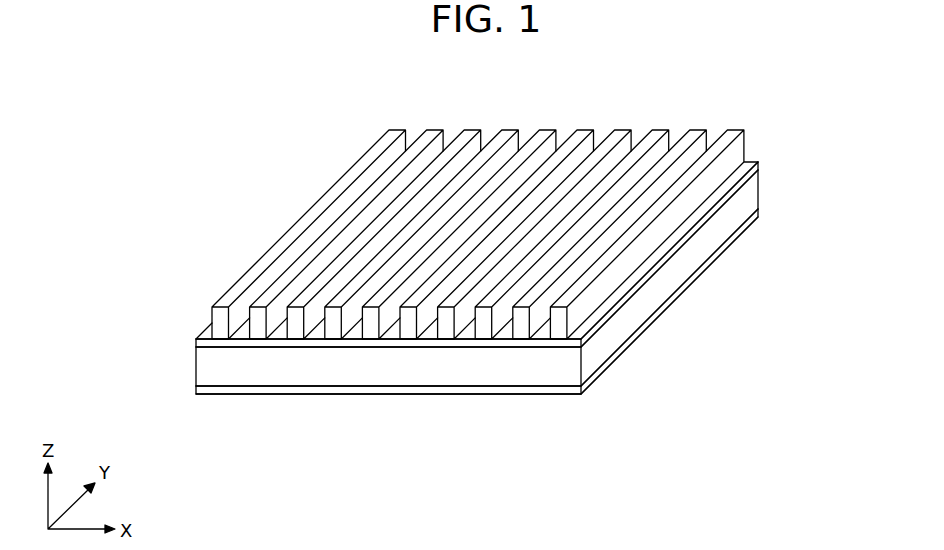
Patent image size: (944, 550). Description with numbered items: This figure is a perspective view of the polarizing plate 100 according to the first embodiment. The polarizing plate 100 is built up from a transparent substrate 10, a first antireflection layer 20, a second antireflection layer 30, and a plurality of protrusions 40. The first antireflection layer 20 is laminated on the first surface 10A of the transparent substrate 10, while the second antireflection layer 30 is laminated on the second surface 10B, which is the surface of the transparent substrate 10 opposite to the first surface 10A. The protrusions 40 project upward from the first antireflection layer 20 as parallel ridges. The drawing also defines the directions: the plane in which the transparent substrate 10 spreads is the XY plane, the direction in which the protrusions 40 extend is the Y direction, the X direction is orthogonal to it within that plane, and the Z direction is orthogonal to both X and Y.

The polarizing plate 100 is at (765, 103).
The transparent substrate 10 is at (653, 290).
The first surface 10A is at (206, 343).
The second surface 10B is at (208, 396).
The first antireflection layer 20 is at (697, 228).
The second antireflection layer 30 is at (615, 362).
The protrusions 40 is at (735, 130).